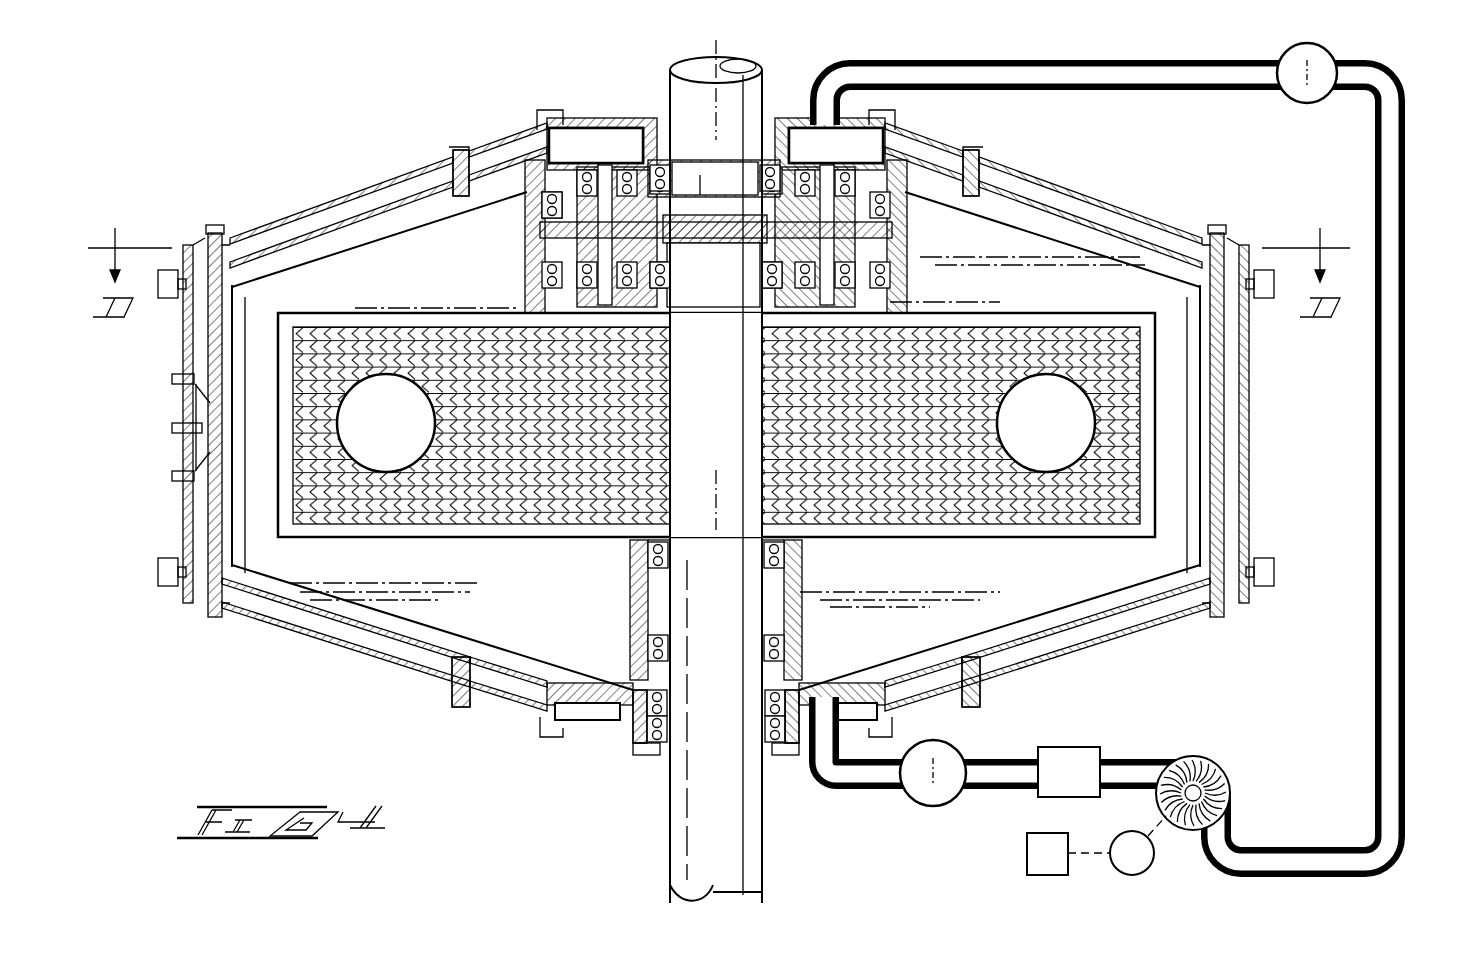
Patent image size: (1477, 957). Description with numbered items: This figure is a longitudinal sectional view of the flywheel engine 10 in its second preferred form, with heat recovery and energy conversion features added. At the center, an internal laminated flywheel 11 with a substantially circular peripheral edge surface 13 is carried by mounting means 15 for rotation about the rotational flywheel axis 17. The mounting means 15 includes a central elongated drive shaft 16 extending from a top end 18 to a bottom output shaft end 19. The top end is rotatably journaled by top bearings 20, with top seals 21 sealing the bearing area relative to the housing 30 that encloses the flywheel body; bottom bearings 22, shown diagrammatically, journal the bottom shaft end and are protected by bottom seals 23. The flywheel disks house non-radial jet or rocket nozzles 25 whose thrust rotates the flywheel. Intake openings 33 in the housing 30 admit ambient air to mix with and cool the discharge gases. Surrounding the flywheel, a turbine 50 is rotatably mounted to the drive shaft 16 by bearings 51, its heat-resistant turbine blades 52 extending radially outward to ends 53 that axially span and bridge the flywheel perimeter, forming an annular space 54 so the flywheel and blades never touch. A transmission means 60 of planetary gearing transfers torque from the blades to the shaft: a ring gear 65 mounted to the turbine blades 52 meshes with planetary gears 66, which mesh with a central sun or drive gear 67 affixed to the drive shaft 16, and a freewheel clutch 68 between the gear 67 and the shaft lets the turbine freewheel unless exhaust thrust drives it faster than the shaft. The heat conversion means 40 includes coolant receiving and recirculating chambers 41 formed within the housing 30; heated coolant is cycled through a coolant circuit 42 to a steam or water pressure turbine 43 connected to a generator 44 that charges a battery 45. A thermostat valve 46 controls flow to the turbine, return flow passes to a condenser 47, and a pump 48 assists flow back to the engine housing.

The flywheel engine 10 is at (322, 722).
The laminated flywheel 11 is at (880, 545).
The peripheral edge surface 13 is at (292, 476).
The mounting means 15 is at (700, 168).
The drive shaft 16 is at (742, 103).
The rotational flywheel axis 17 is at (713, 46).
The top end 18 is at (694, 90).
The bottom output shaft end 19 is at (700, 832).
The top bearings 20 is at (836, 145).
The top seals 21 is at (748, 320).
The bottom bearings 22 is at (642, 744).
The bottom seals 23 is at (790, 690).
The jet or rocket nozzles 25 is at (370, 440).
The housing 30 is at (1078, 183).
The intake openings 33 is at (520, 152).
The heat conversion means 40 is at (1408, 590).
The coolant receiving and recirculating chambers 41 is at (1165, 610).
The coolant circuit 42 is at (1372, 715).
The steam or water pressure turbine 43 is at (1232, 800).
The generator 44 is at (1116, 846).
The battery 45 is at (1027, 855).
The thermostat valve 46 is at (1296, 92).
The condenser 47 is at (1080, 770).
The pump 48 is at (920, 795).
The turbine 50 is at (1215, 438).
The bearings 51 is at (522, 238).
The turbine blades 52 is at (323, 290).
The blade ends 53 is at (232, 521).
The annular space 54 is at (1165, 385).
The transmission means 60 is at (910, 231).
The ring gear 65 is at (596, 145).
The planetary gears 66 is at (714, 178).
The sun or drive gear 67 is at (728, 288).
The freewheel clutch 68 is at (716, 280).